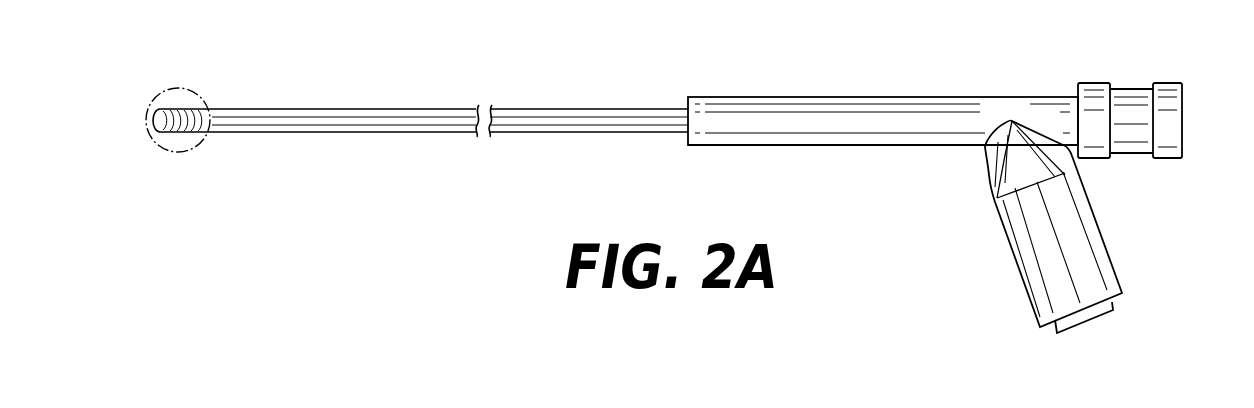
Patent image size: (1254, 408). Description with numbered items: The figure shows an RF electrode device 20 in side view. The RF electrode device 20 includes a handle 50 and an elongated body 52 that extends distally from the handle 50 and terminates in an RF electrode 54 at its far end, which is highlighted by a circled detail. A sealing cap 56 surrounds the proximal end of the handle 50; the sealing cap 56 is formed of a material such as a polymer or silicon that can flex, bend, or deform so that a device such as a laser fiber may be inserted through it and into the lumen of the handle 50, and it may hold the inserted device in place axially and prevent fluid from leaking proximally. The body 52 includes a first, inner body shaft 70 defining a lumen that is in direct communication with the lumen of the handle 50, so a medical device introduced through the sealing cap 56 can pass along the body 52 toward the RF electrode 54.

The RF electrode device 20 is at (795, 87).
The handle 50 is at (880, 146).
The body 52 is at (400, 98).
The RF electrode 54 is at (170, 100).
The sealing cap 56 is at (1132, 89).
The first body shaft 70 is at (1100, 233).